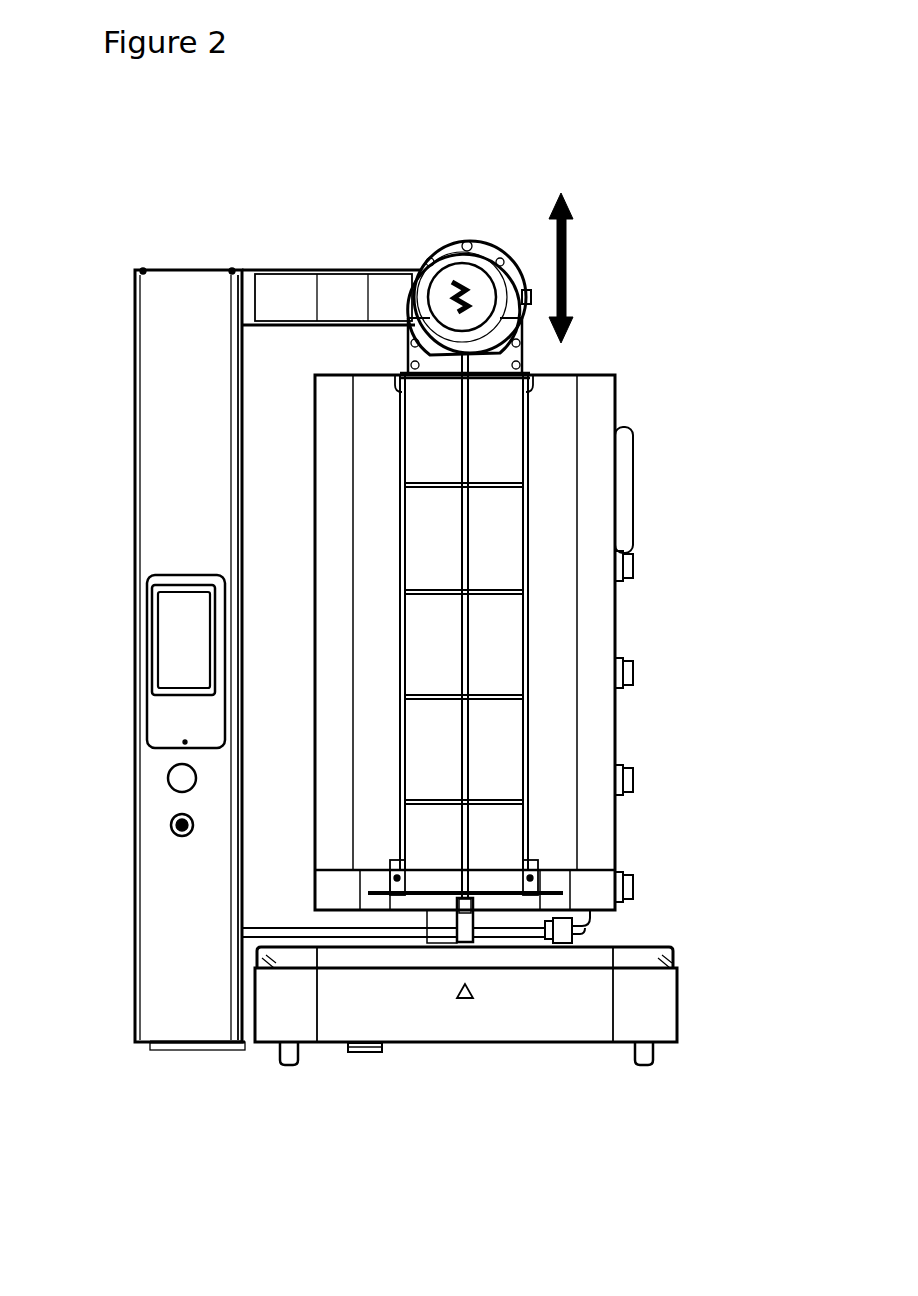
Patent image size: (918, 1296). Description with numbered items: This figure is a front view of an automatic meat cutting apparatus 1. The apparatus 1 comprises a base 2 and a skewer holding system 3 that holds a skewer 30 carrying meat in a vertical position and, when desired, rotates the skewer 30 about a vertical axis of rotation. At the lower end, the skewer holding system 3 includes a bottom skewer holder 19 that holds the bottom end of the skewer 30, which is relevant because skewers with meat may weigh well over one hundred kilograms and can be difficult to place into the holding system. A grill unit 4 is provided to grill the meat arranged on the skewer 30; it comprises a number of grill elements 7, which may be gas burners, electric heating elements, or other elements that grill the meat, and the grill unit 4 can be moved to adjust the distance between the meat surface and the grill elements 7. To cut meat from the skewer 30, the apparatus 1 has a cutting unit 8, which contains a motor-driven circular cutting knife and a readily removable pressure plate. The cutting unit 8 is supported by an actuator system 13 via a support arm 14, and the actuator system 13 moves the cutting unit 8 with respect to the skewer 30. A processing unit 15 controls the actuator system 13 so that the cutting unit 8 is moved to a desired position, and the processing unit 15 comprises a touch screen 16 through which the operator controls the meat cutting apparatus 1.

The automatic meat cutting apparatus 1 is at (669, 292).
The base 2 is at (652, 1017).
The skewer holding system 3 is at (480, 914).
The grill unit 4 is at (583, 470).
The grill elements 7 is at (490, 635).
The cutting unit 8 is at (443, 288).
The actuator system 13 is at (170, 503).
The support arm 14 is at (348, 292).
The processing unit 15 is at (180, 714).
The touch screen 16 is at (172, 615).
The bottom skewer holder 19 is at (465, 935).
The skewer 30 is at (470, 745).